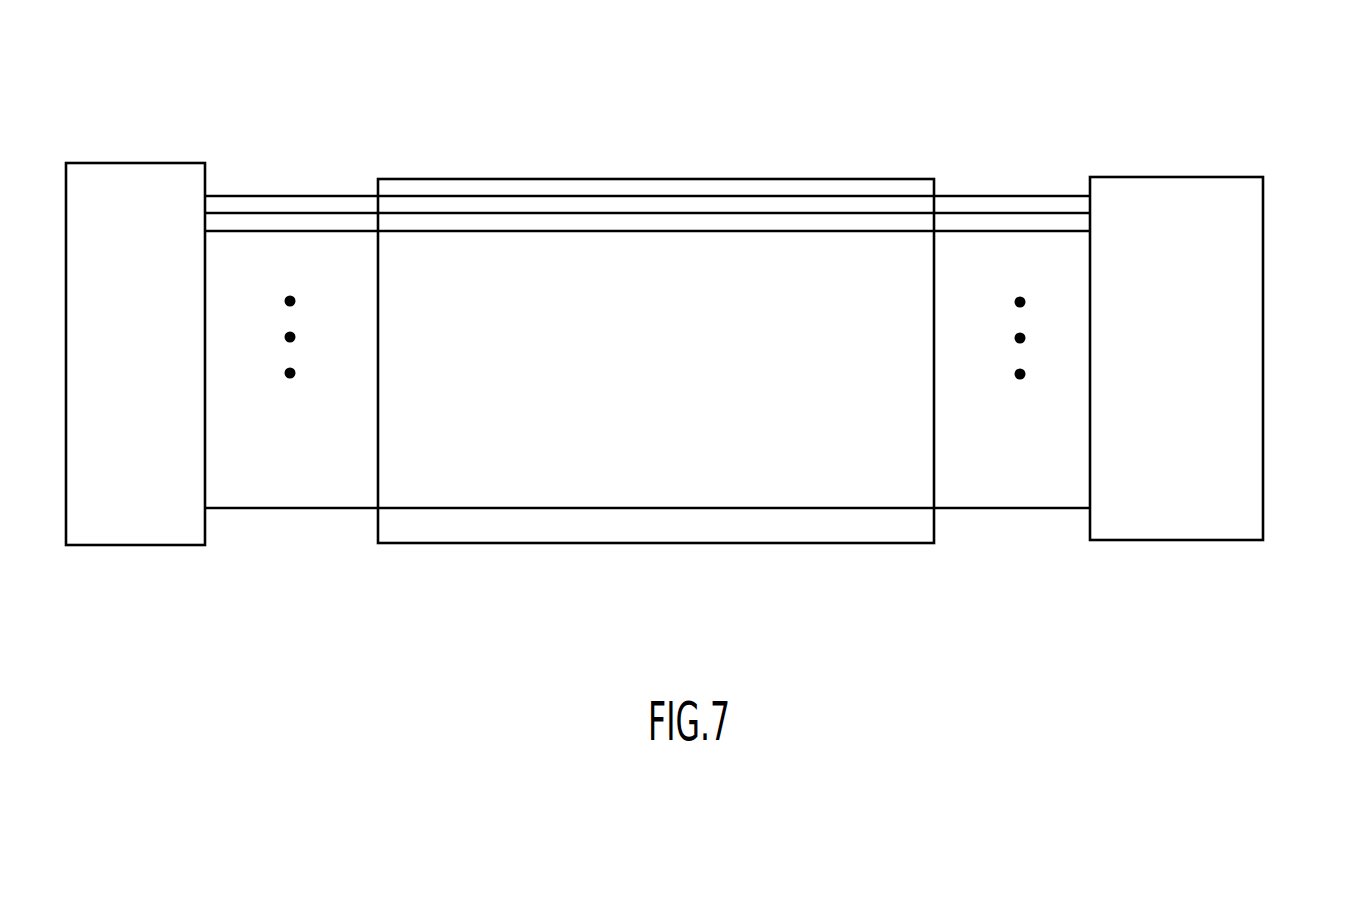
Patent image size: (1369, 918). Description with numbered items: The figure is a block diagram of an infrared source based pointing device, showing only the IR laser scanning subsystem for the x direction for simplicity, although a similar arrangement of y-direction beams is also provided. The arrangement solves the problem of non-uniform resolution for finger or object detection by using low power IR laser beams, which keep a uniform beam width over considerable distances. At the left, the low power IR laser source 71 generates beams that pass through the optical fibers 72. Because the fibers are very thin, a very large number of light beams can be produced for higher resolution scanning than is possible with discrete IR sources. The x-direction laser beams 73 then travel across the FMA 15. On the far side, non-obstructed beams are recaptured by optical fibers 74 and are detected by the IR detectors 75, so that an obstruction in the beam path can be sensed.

The FMA 15 is at (670, 413).
The low power IR laser source 71 is at (152, 226).
The optical fibers 72 is at (291, 182).
The x-direction laser beams 73 is at (655, 198).
The optical fibers 74 is at (992, 199).
The IR detectors 75 is at (1228, 384).